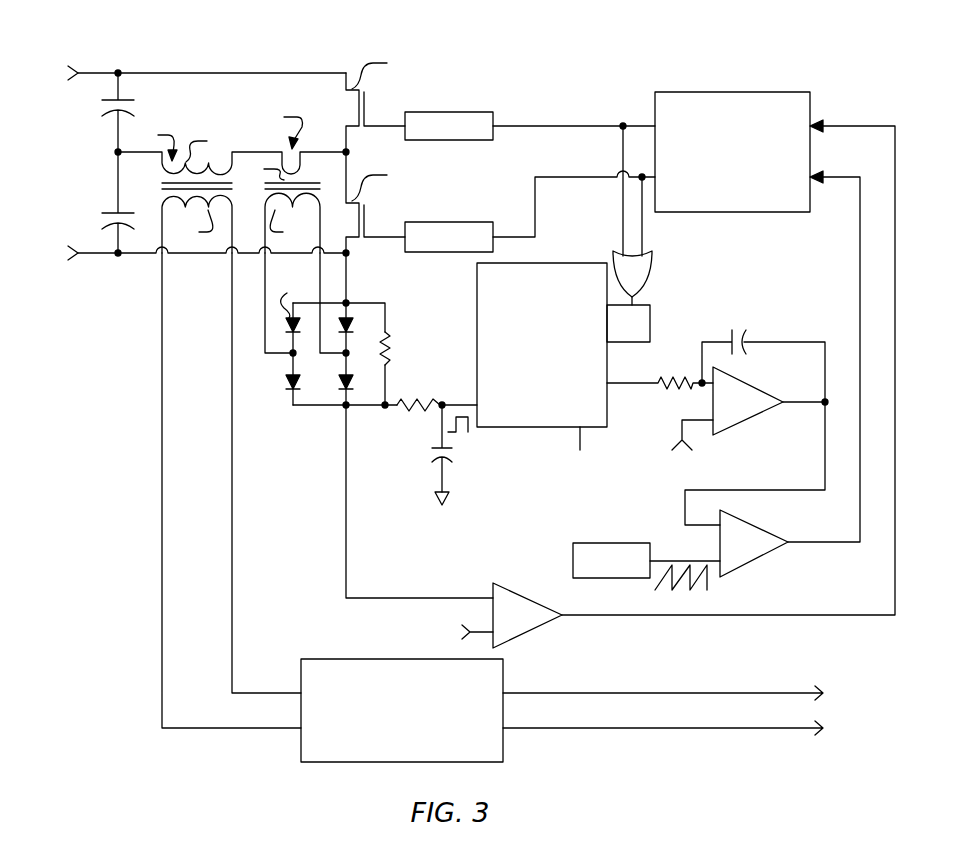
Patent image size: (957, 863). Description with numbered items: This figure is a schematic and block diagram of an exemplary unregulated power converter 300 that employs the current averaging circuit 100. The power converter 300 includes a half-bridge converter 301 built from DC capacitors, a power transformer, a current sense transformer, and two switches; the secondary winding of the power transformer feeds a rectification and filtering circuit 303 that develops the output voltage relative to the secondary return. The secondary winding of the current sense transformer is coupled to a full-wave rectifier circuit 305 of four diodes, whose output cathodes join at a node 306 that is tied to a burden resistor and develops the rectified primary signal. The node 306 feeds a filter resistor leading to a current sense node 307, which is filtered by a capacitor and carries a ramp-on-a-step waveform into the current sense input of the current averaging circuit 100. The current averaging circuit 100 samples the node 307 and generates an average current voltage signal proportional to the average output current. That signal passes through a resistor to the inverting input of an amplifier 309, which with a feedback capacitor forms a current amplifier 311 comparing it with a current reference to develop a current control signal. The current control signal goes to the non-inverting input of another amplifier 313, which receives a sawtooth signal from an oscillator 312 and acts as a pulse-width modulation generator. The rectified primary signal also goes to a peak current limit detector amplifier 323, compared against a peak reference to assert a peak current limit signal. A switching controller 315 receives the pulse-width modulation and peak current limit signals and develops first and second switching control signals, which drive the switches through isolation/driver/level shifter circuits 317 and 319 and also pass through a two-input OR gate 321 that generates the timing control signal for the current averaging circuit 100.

The unregulated power converter 300 is at (529, 56).
The half-bridge converter 301 is at (226, 118).
The rectification and filtering circuit 303 is at (388, 659).
The full-wave rectifier circuit 305 is at (283, 421).
The node 306 is at (345, 409).
The current sense (CS) node 307 is at (437, 412).
The amplifier 309 is at (742, 422).
The current amplifier 311 is at (772, 303).
The oscillator 312 is at (618, 543).
The amplifier 313 is at (770, 554).
The switching controller 315 is at (725, 92).
The isolation/driver/level shifter circuit 317 is at (478, 112).
The isolation/driver/level shifter circuit 319 is at (472, 222).
The 2-input OR gate 321 is at (652, 258).
The amplifier 323 is at (538, 601).
The current averaging circuit 100 is at (477, 300).